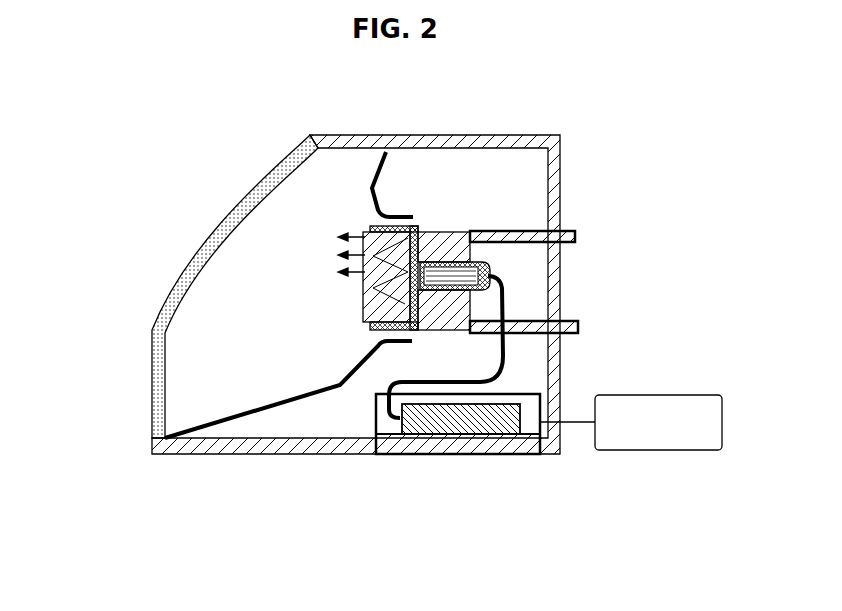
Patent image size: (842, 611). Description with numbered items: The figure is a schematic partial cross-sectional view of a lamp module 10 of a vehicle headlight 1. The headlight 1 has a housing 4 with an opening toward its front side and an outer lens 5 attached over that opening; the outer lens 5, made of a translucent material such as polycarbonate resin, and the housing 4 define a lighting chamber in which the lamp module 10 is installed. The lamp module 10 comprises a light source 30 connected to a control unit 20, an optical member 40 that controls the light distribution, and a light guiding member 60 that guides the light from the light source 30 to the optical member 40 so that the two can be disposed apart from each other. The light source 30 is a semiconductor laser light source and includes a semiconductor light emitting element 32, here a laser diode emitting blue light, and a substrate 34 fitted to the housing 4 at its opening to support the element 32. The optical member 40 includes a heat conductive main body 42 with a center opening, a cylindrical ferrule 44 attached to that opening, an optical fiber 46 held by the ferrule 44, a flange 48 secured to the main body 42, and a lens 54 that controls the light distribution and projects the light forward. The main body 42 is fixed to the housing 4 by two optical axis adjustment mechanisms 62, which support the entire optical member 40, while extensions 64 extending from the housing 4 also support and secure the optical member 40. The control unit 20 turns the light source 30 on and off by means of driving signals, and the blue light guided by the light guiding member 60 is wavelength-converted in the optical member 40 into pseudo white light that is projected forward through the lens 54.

The vehicle headlight 1 is at (570, 120).
The housing 4 is at (462, 135).
The outer lens 5 is at (247, 198).
The lamp module 10 is at (255, 494).
The control unit 20 is at (703, 395).
The light source 30 is at (377, 423).
The semiconductor light emitting element 32 is at (472, 454).
The substrate 34 is at (410, 455).
The optical member 40 is at (358, 310).
The main body 42 is at (465, 232).
The cylindrical ferrule 44 is at (488, 258).
The optical fiber 46 is at (486, 271).
The flange 48 is at (421, 226).
The lens 54 is at (372, 290).
The light guiding member 60 is at (504, 358).
The optical axis adjustment mechanism 62 is at (568, 229).
The extension 64 is at (372, 190).